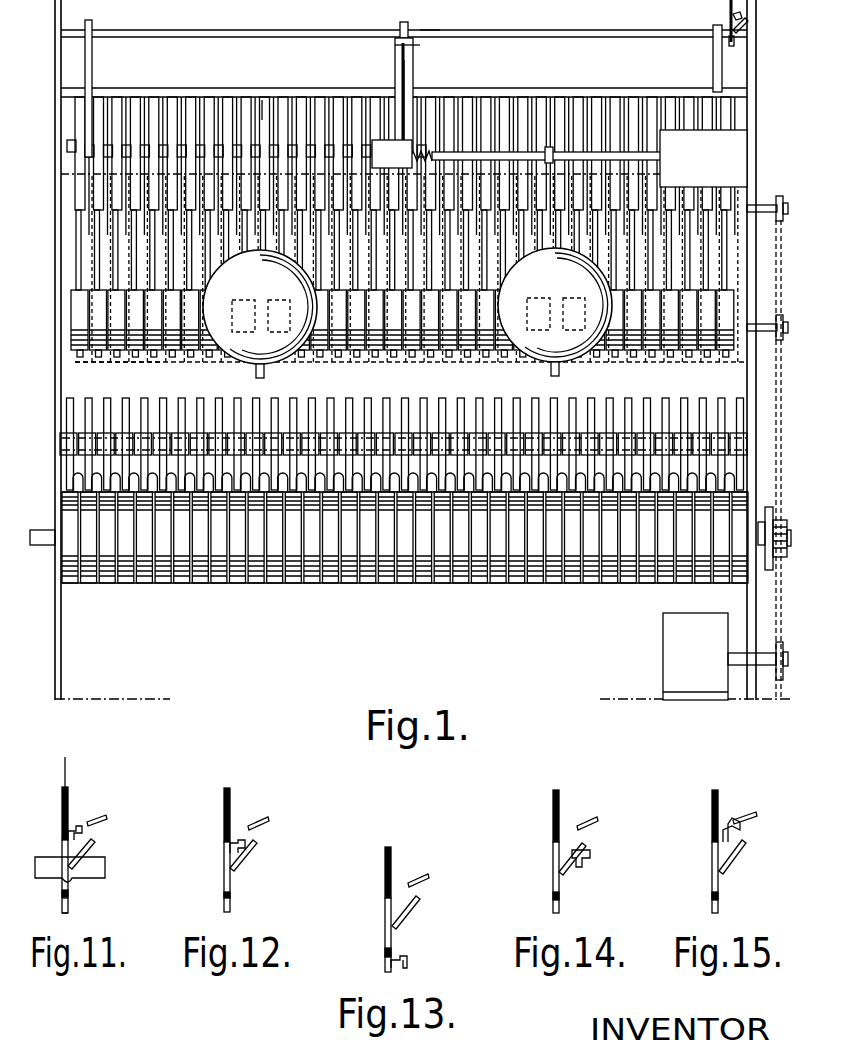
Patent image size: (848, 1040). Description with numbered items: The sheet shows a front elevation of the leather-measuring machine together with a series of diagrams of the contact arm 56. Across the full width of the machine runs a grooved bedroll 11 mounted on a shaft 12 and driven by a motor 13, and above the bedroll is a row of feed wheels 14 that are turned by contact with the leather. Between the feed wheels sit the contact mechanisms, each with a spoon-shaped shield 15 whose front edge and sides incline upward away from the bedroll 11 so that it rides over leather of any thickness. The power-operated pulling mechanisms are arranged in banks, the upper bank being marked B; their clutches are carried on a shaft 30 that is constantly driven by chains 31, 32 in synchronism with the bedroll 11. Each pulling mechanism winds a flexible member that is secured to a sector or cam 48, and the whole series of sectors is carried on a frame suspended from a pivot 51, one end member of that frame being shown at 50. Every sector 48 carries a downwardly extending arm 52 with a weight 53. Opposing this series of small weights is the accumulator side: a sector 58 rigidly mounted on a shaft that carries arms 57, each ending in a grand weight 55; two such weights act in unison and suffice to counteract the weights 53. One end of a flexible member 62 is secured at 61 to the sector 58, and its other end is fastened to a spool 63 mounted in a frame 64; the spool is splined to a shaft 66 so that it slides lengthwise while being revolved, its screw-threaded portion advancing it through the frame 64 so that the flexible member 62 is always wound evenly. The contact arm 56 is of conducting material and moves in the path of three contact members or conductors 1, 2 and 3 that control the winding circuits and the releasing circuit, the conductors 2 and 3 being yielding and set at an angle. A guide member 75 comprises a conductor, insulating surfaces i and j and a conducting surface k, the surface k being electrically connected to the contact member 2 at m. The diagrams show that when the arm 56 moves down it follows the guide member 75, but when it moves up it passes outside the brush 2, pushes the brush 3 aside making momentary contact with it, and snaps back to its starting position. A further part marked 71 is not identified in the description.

In FIG. 1, the contact member 1 is at (734, 46).
In FIG. 11, the contact member 1 is at (68, 904).
In FIG. 12, the contact member 1 is at (230, 908).
In FIG. 13, the contact member 1 is at (385, 968).
In FIG. 14, the contact member 1 is at (559, 910).
In FIG. 15, the contact member 1 is at (718, 910).
In FIG. 1, the contact member 2 is at (740, 30).
In FIG. 11, the contact member 2 is at (95, 843).
In FIG. 12, the contact member 2 is at (257, 842).
In FIG. 13, the contact member 2 is at (420, 898).
In FIG. 14, the contact member 2 is at (586, 845).
In FIG. 15, the contact member 2 is at (746, 845).
In FIG. 11, the contact member 3 is at (107, 817).
In FIG. 12, the contact member 3 is at (270, 820).
In FIG. 13, the contact member 3 is at (429, 877).
In FIG. 14, the contact member 3 is at (597, 820).
In FIG. 15, the contact member 3 is at (745, 814).
In FIG. 1, the grooved bedroll 11 is at (350, 585).
In FIG. 1, the shaft 12 is at (40, 545).
In FIG. 1, the motor 13 is at (683, 634).
In FIG. 1, the feed wheels 14 is at (386, 398).
In FIG. 1, the spoon-shaped shield 15 is at (100, 478).
In FIG. 1, the shaft 30 is at (774, 196).
In FIG. 1, the chain 31 is at (760, 548).
In FIG. 1, the chain 32 is at (780, 400).
In FIG. 1, the sector or cam 48 is at (230, 100).
In FIG. 1, the frame end member 50 is at (92, 62).
In FIG. 1, the pivot 51 is at (426, 36).
In FIG. 1, the downwardly extending arm 52 is at (76, 258).
In FIG. 1, the weight 53 is at (105, 308).
In FIG. 1, the grand weight 55 is at (246, 338).
In FIG. 1, the contact arm 56 is at (742, 16).
In FIG. 11, the contact arm 56 is at (80, 826).
In FIG. 12, the contact arm 56 is at (238, 840).
In FIG. 13, the contact arm 56 is at (407, 962).
In FIG. 14, the contact arm 56 is at (590, 858).
In FIG. 15, the contact arm 56 is at (740, 833).
In FIG. 1, the arm 57 is at (263, 100).
In FIG. 1, the sector 58 is at (395, 68).
In FIG. 1, the securing point 61 is at (395, 45).
In FIG. 1, the flexible member 62 is at (408, 78).
In FIG. 1, the spool 63 is at (428, 154).
In FIG. 1, the frame 64 is at (380, 148).
In FIG. 1, the shaft 66 is at (556, 150).
In FIG. 1, the bracket 71 is at (160, 362).
In FIG. 1, the guide member 75 is at (728, 6).
In FIG. 11, the guide member 75 is at (59, 763).
In FIG. 1, the upper bank of pulling mechanisms B is at (76, 186).
In FIG. 11, the insulating surface i is at (62, 802).
In FIG. 11, the insulating surface j is at (62, 898).
In FIG. 11, the conducting surface k is at (62, 838).
In FIG. 11, the electrical connection m is at (105, 870).